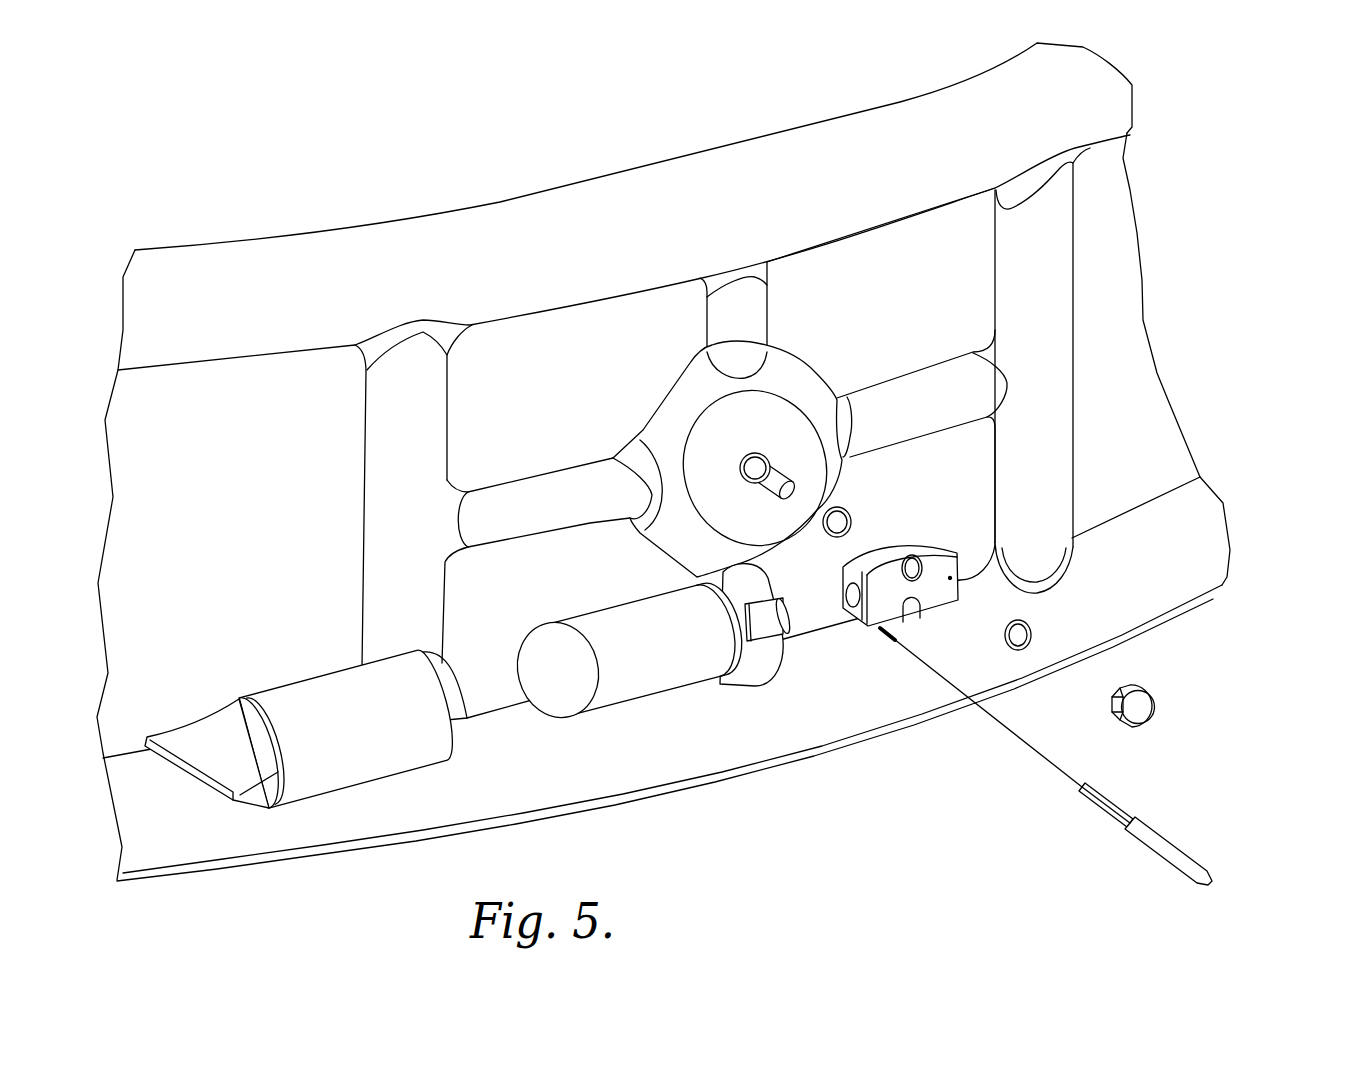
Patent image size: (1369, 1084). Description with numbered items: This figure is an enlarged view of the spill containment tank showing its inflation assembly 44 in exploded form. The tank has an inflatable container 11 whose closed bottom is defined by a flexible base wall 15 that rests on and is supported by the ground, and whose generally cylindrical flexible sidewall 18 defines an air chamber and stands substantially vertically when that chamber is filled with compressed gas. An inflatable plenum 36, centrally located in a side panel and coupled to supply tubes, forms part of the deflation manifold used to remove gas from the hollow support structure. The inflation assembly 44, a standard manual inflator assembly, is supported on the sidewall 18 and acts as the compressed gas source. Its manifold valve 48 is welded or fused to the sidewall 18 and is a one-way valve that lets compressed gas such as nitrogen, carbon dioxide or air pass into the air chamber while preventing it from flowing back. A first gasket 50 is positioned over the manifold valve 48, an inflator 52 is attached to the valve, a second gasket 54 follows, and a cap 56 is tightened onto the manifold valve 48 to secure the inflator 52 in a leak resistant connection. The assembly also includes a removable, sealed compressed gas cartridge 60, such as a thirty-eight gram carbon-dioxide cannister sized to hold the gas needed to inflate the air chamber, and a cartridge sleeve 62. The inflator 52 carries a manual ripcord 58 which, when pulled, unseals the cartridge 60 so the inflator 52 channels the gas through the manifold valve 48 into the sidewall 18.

The inflatable container 11 is at (393, 205).
The flexible base wall 15 is at (1213, 597).
The flexible sidewall 18 is at (1120, 300).
The inflatable plenum 36 is at (788, 365).
The inflation assembly 44 is at (843, 690).
The manifold valve 48 is at (766, 460).
The first gasket 50 is at (845, 505).
The inflator 52 is at (898, 540).
The second gasket 54 is at (1033, 635).
The cap 56 is at (1148, 695).
The manual ripcord 58 is at (1123, 807).
The compressed gas cartridge 60 is at (625, 677).
The cartridge sleeve 62 is at (348, 757).